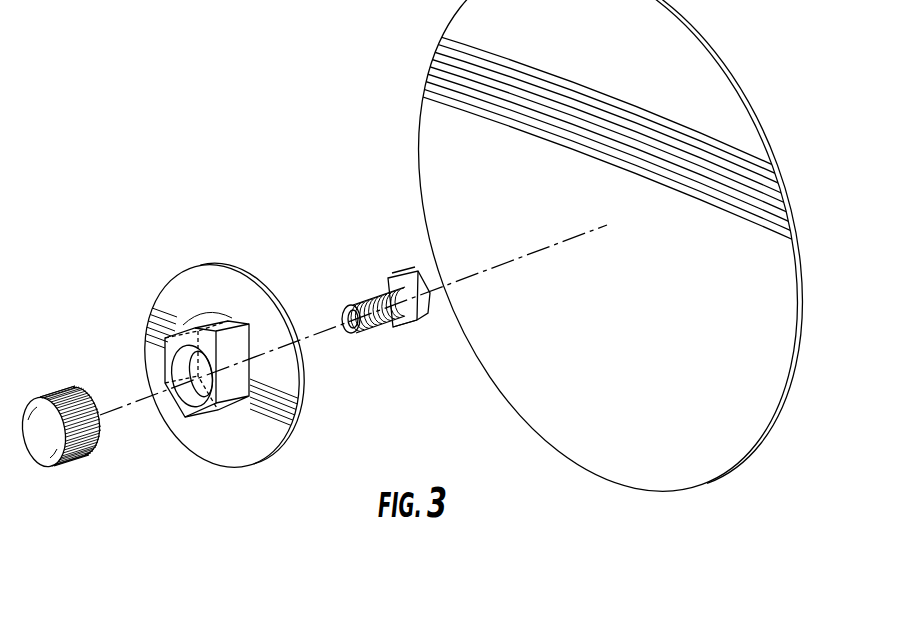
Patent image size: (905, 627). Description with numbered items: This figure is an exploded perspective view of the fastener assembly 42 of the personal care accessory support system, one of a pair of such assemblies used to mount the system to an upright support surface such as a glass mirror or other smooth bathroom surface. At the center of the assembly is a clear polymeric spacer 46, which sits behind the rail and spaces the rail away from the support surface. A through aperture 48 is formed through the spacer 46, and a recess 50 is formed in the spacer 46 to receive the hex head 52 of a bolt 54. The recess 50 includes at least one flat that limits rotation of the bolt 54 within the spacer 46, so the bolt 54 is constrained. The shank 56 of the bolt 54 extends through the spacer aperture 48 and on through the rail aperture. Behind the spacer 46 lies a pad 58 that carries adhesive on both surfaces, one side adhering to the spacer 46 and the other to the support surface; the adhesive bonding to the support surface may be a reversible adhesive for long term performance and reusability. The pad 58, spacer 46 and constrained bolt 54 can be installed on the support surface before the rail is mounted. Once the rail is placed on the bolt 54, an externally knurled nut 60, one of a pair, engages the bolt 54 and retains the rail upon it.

The fastener assembly 42 is at (203, 84).
The spacer 46 is at (217, 290).
The through aperture 48 is at (177, 373).
The recess 50 is at (188, 305).
The hex head 52 is at (415, 272).
The bolt 54 is at (363, 298).
The shank 56 is at (388, 323).
The pad 58 is at (648, 261).
The externally knurled nut 60 is at (47, 419).